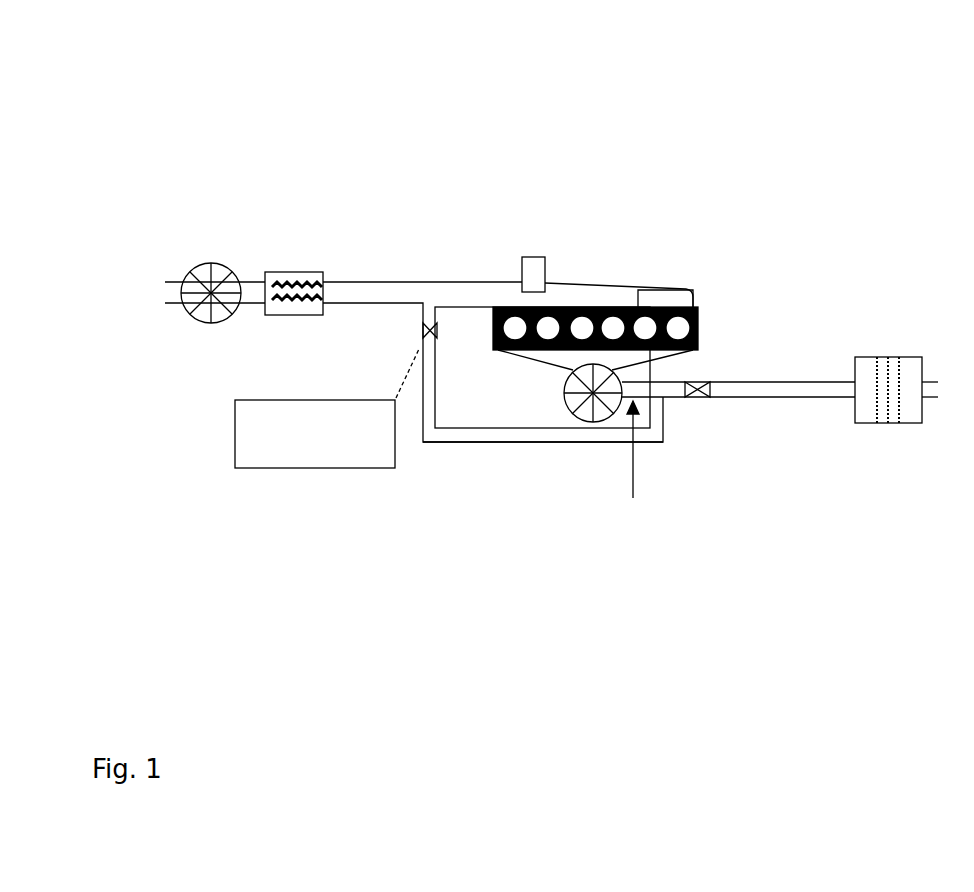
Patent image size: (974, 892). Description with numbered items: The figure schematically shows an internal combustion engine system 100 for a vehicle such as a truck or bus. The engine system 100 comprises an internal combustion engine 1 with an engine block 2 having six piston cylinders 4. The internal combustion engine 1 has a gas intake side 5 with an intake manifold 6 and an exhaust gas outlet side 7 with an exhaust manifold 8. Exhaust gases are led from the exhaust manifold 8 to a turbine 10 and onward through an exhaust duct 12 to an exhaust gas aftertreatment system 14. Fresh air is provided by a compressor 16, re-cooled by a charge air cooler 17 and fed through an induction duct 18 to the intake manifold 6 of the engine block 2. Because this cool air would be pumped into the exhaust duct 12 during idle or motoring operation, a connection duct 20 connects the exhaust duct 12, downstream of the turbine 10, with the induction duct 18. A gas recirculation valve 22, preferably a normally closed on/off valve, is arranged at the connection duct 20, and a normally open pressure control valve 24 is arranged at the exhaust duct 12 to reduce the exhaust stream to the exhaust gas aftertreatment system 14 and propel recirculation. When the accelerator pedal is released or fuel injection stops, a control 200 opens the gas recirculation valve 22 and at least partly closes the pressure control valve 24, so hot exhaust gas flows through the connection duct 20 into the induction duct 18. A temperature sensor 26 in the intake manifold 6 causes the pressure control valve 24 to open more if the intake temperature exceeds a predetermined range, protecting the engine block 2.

The internal combustion engine system 100 is at (781, 84).
The internal combustion engine 1 is at (463, 230).
The engine block 2 is at (703, 310).
The piston cylinders 4 is at (638, 307).
The gas intake side 5 is at (618, 263).
The intake manifold 6 is at (607, 302).
The exhaust gas outlet side 7 is at (632, 466).
The exhaust manifold 8 is at (547, 357).
The turbine 10 is at (597, 420).
The exhaust duct 12 is at (780, 393).
The exhaust gas aftertreatment system 14 is at (888, 380).
The compressor 16 is at (210, 278).
The charge air cooler 17 is at (293, 278).
The induction duct 18 is at (470, 296).
The connection duct 20 is at (458, 435).
The gas recirculation valve 22 is at (421, 331).
The pressure control valve 24 is at (697, 400).
The temperature sensor 26 is at (525, 256).
The control 200 is at (234, 455).